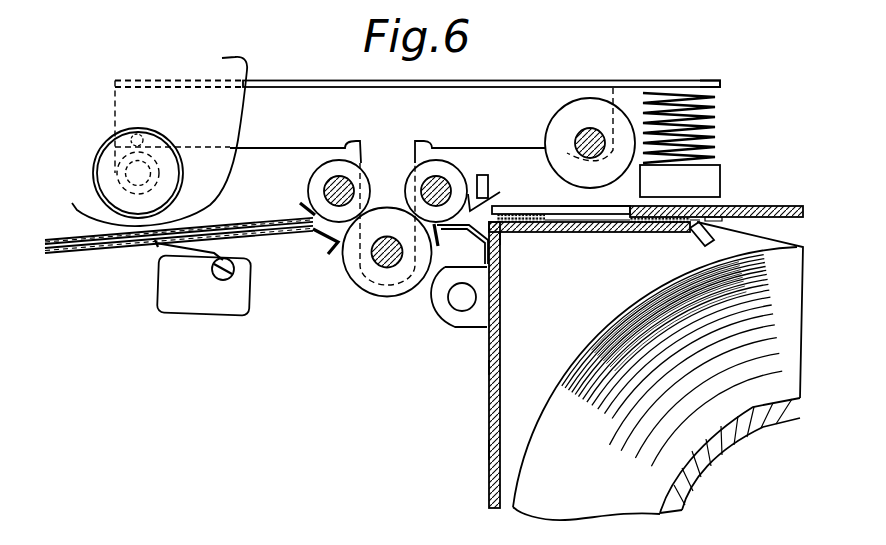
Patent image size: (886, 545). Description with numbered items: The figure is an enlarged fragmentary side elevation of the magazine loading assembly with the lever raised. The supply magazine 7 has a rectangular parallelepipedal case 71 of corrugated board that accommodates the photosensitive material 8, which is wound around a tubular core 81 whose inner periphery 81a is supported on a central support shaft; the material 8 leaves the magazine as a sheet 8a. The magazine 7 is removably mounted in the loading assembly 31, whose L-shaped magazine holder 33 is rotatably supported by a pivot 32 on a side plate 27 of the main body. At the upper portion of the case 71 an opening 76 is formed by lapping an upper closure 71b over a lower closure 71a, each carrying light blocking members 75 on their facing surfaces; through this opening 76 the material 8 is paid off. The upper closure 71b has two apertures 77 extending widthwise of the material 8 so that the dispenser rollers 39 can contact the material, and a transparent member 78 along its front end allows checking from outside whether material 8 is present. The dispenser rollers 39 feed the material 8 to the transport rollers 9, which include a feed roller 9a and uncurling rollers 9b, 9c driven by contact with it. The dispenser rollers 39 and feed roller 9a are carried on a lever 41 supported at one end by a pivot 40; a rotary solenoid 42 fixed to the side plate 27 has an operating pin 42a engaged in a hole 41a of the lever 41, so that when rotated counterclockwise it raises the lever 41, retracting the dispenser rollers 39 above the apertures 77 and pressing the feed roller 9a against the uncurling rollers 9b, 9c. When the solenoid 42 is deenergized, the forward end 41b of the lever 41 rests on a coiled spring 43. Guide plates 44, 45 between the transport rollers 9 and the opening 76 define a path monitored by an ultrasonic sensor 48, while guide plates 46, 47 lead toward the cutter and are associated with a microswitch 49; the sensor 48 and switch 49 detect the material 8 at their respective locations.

The supply magazine 7 is at (787, 206).
The photosensitive material 8 is at (597, 227).
The paper sheet leading portion 8a is at (103, 247).
The transport rollers 9 is at (391, 308).
The feed roller 9a is at (362, 282).
The uncurling roller 9b is at (440, 167).
The uncurling roller 9c is at (343, 167).
The side plate 27 is at (192, 185).
The loading assembly 31 is at (477, 373).
The pivot 32 is at (458, 312).
The magazine holder 33 is at (483, 448).
The dispenser rollers 39 is at (566, 116).
The pivot 40 is at (130, 165).
The lever 41 is at (358, 96).
The hole 41a is at (128, 133).
The forward end of the lever 41b is at (697, 80).
The rotary solenoid 42 is at (97, 180).
The operating pin 42a is at (163, 136).
The coiled spring 43 is at (718, 126).
The guide plate 44 is at (508, 206).
The guide plate 45 is at (470, 242).
The guide plate 46 is at (272, 226).
The guide plate 47 is at (289, 233).
The ultrasonic sensor 48 is at (496, 190).
The microswitch 49 is at (240, 303).
The case 71 is at (483, 400).
The lower closure 71a is at (661, 233).
The upper closure 71b is at (722, 204).
The light blocking members 75 is at (722, 217).
The opening 76 is at (504, 241).
The apertures 77 is at (612, 206).
The transparent member 78 is at (534, 217).
The tubular core 81 is at (718, 440).
The inner periphery of the tubular core 81a is at (694, 480).